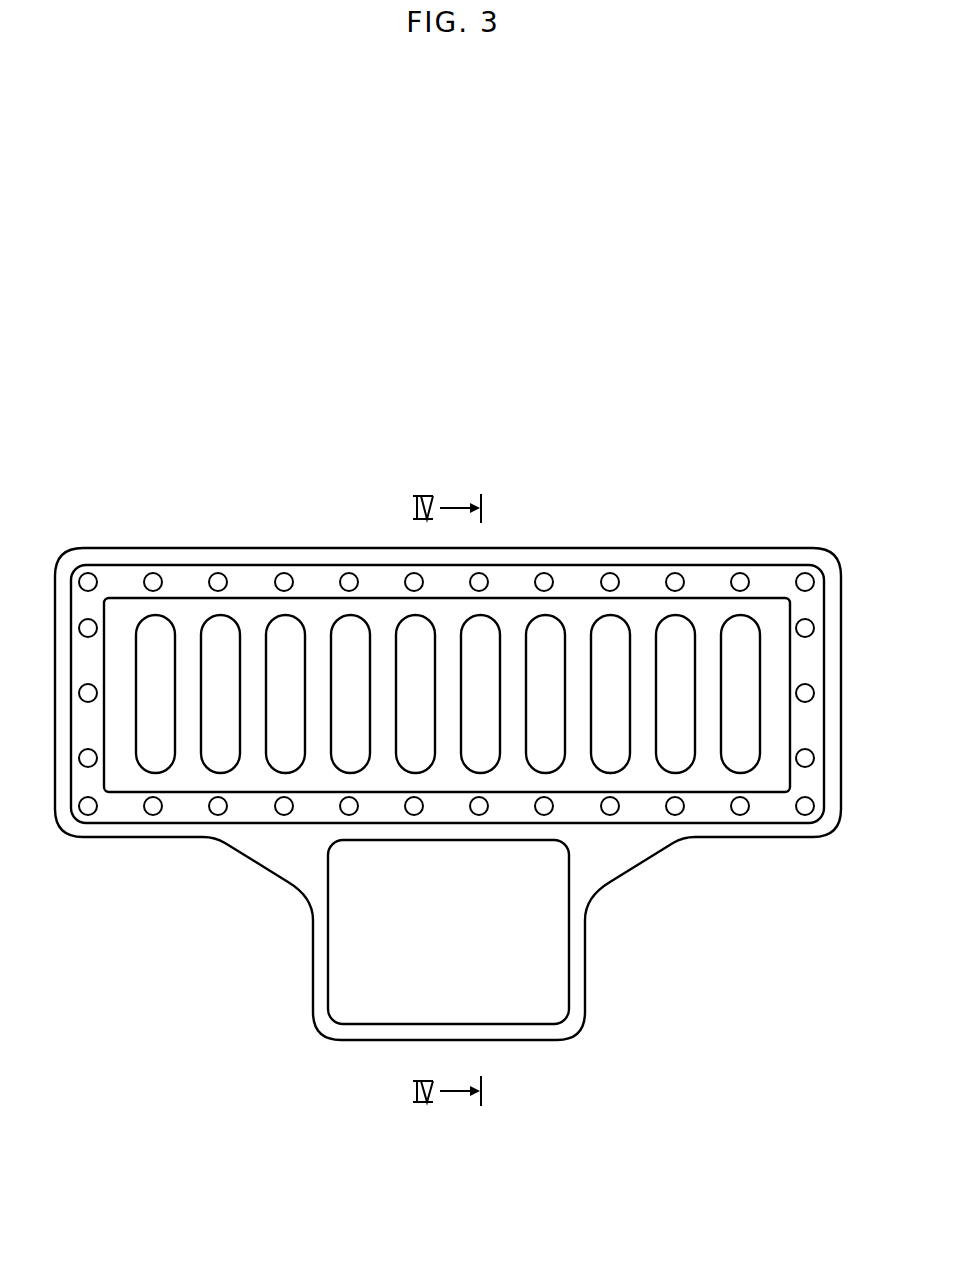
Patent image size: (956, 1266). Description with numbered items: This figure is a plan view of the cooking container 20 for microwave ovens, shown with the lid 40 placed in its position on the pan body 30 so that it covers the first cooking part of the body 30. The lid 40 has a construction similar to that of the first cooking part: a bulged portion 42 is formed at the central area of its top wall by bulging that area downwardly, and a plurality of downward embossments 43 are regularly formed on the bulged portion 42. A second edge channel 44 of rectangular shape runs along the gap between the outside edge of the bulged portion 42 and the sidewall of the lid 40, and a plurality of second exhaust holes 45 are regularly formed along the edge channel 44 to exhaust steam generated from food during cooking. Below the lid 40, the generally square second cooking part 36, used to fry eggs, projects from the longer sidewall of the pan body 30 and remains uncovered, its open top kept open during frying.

The cooking container 20 is at (350, 433).
The pan body 30 is at (672, 870).
The second cooking part 36 is at (586, 967).
The lid 40 is at (447, 630).
The bulged portion 42 is at (185, 613).
The downward embossments 43 is at (342, 633).
The second edge channel 44 is at (647, 583).
The second exhaust holes 45 is at (605, 575).